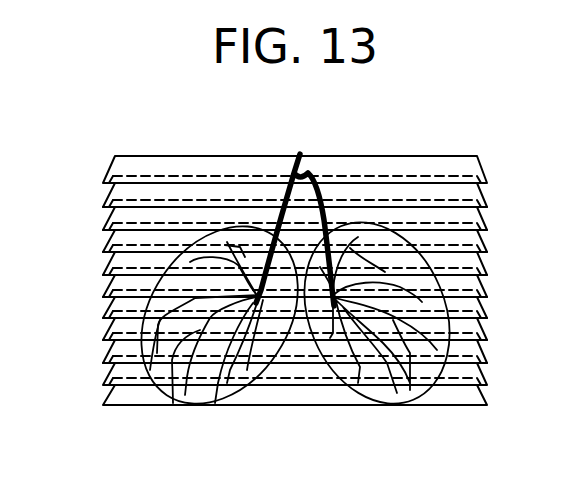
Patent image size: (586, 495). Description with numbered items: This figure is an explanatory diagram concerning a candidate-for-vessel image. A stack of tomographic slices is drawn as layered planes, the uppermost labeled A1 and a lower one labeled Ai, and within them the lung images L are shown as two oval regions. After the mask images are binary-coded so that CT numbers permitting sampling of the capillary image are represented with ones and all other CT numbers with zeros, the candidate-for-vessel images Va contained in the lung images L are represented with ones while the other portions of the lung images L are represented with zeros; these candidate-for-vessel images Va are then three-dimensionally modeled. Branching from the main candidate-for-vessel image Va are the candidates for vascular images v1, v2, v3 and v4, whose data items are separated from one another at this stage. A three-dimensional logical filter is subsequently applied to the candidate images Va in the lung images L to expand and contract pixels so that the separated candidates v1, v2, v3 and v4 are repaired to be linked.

The candidate-for-vessel image Va is at (277, 193).
The candidate for vascular image v1 is at (230, 247).
The candidate for vascular image v2 is at (210, 316).
The candidate for vascular image v3 is at (197, 297).
The candidate for vascular image v4 is at (173, 403).
The lung image L is at (187, 252).
The first slice image A1 is at (311, 153).
The i-th slice image Ai is at (315, 348).